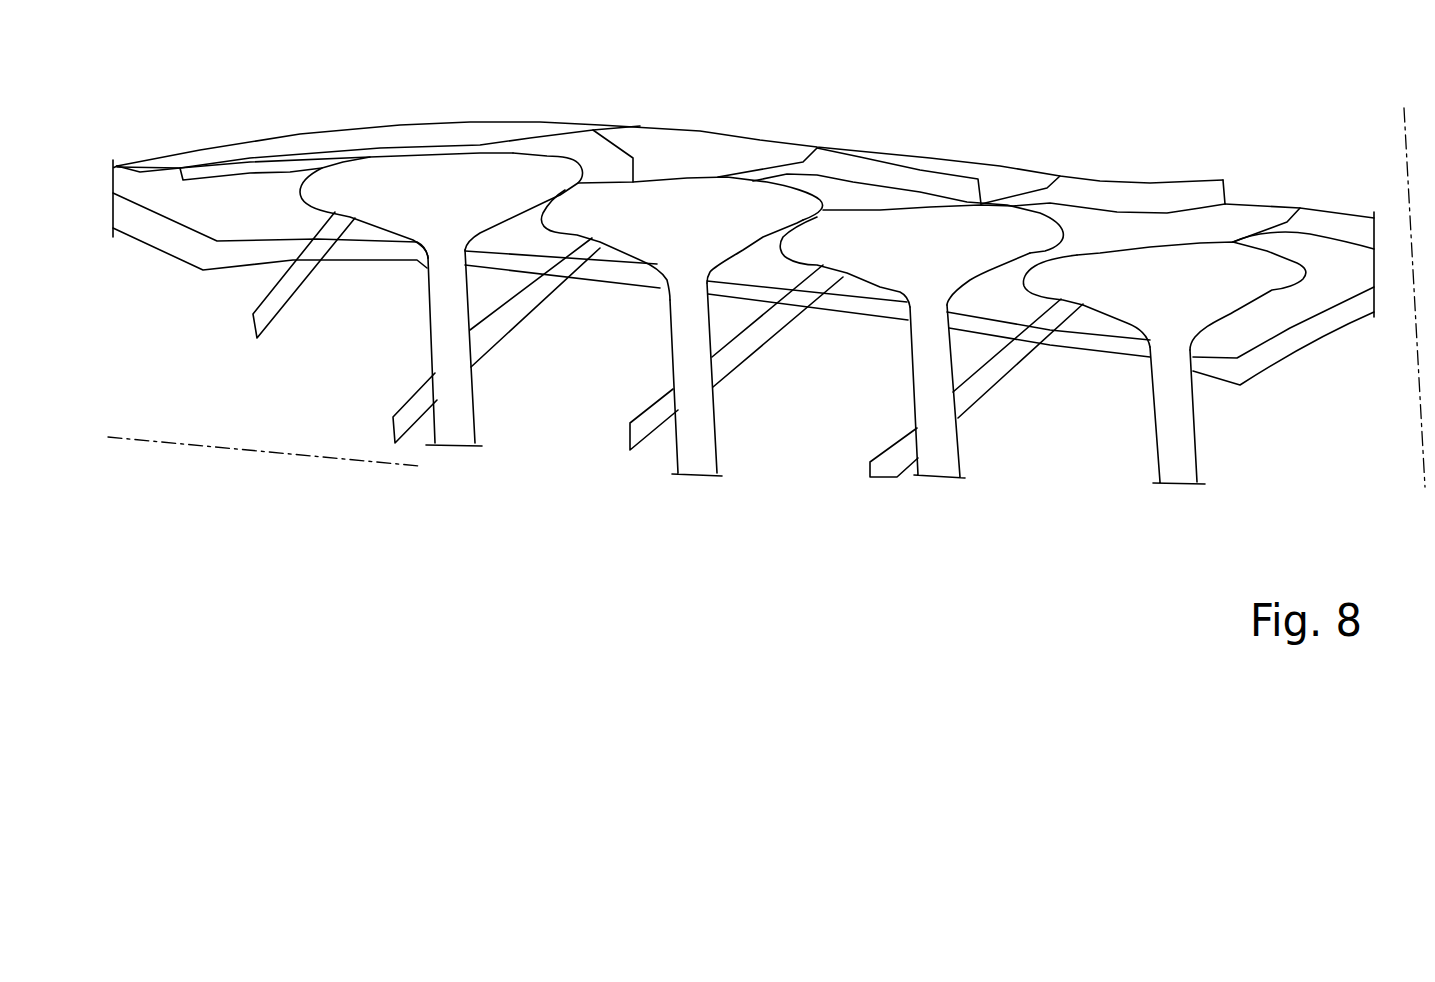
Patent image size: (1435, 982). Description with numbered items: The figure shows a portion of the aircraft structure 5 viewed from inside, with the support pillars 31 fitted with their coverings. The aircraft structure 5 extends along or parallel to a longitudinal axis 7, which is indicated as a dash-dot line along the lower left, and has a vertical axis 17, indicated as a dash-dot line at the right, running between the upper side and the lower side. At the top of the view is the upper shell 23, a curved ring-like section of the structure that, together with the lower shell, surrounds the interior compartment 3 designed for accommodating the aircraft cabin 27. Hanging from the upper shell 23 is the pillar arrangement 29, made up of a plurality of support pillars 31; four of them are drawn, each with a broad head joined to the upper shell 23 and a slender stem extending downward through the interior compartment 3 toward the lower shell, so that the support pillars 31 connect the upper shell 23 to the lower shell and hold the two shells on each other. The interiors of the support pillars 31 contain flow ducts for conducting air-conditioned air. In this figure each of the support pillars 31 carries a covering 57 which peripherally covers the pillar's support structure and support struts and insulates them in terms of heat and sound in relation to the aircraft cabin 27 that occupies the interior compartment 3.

The aircraft structure 5 is at (235, 120).
The upper shell 23 is at (700, 157).
The vertical axis 17 is at (1403, 160).
The longitudinal axis 7 is at (185, 448).
The pillar arrangement 29 is at (815, 367).
The support pillars 31 is at (683, 357).
The interior compartment 3 is at (743, 315).
The aircraft cabin 27 is at (1094, 451).
The covering 57 is at (712, 250).